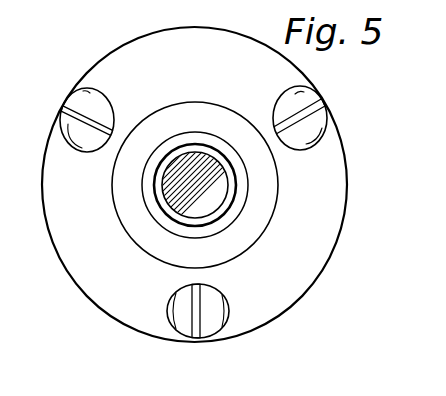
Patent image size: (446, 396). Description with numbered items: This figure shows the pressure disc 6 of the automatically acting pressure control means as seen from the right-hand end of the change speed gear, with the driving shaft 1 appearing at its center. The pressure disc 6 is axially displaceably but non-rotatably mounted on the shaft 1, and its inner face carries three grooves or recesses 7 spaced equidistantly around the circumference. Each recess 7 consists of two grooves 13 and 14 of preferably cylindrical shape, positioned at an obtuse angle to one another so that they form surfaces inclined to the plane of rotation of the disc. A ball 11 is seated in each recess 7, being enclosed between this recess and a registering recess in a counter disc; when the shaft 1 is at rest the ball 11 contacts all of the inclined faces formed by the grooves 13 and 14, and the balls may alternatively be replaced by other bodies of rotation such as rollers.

The driving shaft 1 is at (212, 203).
The pressure disc 6 is at (97, 289).
The grooves or recesses 7 is at (65, 113).
The ball 11 is at (88, 88).
The groove 13 is at (100, 107).
The groove 14 is at (83, 140).